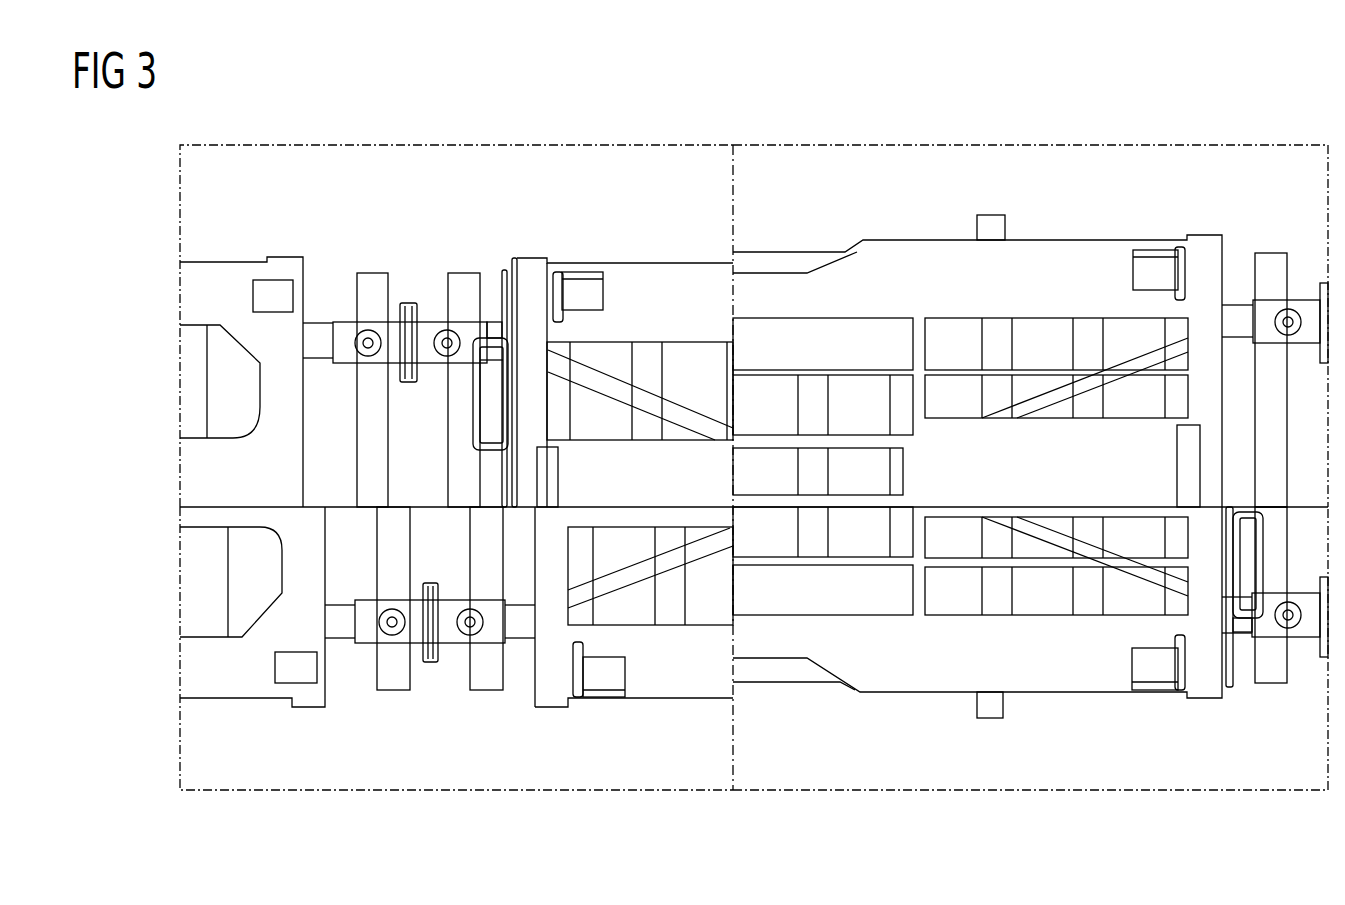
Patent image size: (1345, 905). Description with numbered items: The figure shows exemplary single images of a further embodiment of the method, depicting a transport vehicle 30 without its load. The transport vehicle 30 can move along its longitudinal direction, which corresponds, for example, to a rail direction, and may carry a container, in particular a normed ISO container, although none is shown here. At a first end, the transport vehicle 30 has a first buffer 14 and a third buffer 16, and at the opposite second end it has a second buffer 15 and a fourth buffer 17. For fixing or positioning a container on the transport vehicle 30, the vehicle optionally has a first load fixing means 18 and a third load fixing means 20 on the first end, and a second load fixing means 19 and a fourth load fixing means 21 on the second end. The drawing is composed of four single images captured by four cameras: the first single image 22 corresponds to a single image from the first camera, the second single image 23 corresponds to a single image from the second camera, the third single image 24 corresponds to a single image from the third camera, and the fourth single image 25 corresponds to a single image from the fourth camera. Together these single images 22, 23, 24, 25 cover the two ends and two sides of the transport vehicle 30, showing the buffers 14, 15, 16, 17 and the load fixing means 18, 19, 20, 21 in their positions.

The first buffer 14 is at (408, 300).
The second buffer 15 is at (1325, 270).
The third buffer 16 is at (431, 667).
The fourth buffer 17 is at (1325, 662).
The first load fixing means 18 is at (606, 292).
The second load fixing means 19 is at (1130, 276).
The third load fixing means 20 is at (624, 673).
The fourth load fixing means 21 is at (1130, 660).
The first single image 22 is at (458, 144).
The second single image 23 is at (1025, 144).
The third single image 24 is at (455, 792).
The fourth single image 25 is at (1023, 793).
The transport vehicle 30 is at (684, 314).